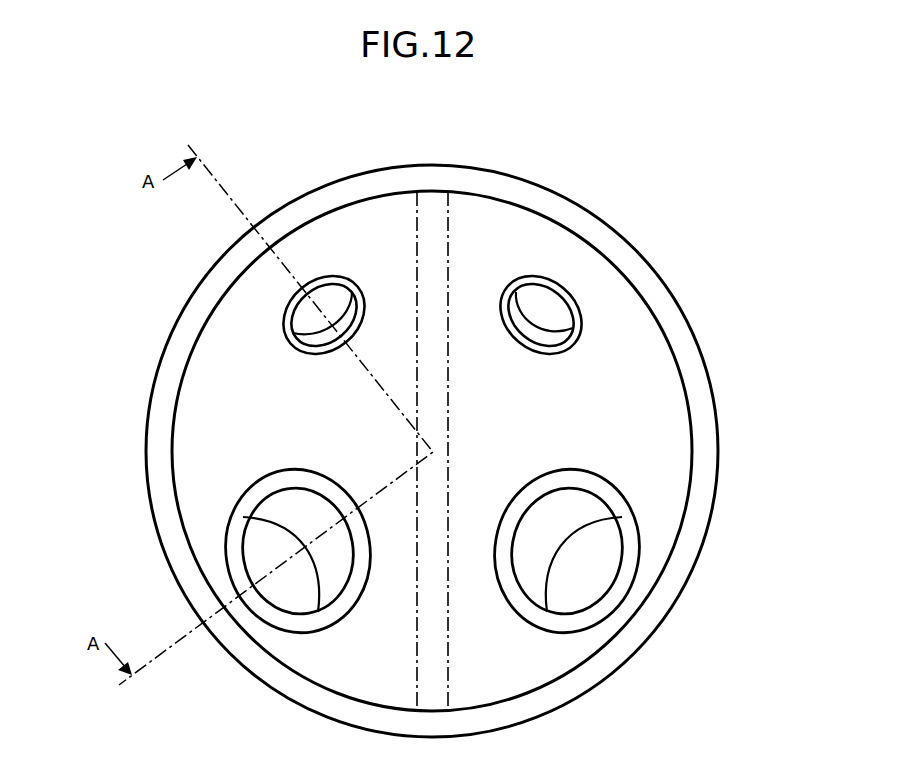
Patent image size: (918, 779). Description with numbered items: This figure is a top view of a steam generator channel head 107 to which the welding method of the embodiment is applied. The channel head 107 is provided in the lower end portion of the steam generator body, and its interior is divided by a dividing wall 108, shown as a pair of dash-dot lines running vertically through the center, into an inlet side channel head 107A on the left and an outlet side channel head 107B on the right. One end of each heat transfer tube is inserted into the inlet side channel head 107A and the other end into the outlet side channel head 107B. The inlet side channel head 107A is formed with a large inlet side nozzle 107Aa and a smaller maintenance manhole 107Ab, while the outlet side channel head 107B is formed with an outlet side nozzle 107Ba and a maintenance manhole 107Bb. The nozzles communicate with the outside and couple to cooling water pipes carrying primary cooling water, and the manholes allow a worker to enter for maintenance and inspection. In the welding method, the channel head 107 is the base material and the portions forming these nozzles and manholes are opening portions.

The channel head 107 is at (680, 298).
The inlet side channel head 107A is at (200, 434).
The outlet side channel head 107B is at (665, 434).
The inlet side nozzle 107Aa is at (330, 557).
The maintenance manhole 107Ab is at (292, 311).
The outlet side nozzle 107Ba is at (533, 555).
The maintenance manhole 107Bb is at (535, 320).
The dividing wall 108 is at (450, 232).